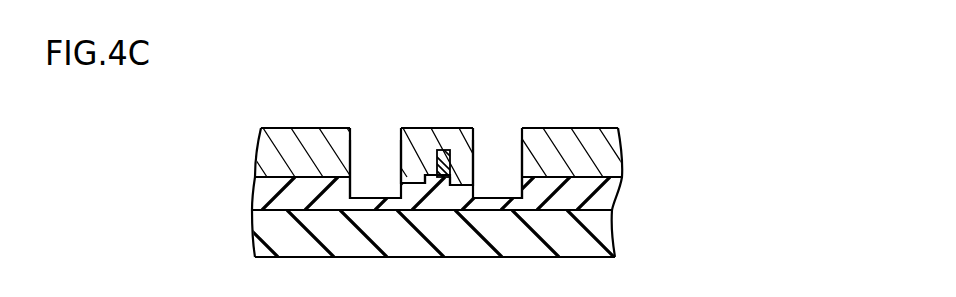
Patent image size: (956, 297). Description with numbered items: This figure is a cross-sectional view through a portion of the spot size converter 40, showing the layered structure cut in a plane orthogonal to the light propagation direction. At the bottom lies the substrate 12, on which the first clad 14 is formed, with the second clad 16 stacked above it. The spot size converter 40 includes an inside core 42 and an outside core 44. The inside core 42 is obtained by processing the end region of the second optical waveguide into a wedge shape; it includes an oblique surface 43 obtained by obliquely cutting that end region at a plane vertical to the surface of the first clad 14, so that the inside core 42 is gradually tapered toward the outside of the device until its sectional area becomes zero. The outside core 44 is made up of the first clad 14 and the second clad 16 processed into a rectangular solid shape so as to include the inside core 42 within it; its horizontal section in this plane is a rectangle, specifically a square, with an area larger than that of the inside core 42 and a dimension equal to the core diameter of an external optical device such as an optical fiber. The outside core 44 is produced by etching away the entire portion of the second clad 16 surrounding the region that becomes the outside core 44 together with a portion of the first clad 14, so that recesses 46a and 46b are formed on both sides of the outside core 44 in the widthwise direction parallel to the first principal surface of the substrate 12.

The substrate 12 is at (598, 230).
The first clad 14 is at (615, 193).
The second clad 16 is at (607, 153).
The spot size converter 40 is at (477, 88).
The inside core 42 is at (420, 143).
The oblique surface 43 is at (453, 160).
The outside core 44 is at (457, 143).
The recess 46a is at (377, 143).
The recess 46b is at (510, 143).